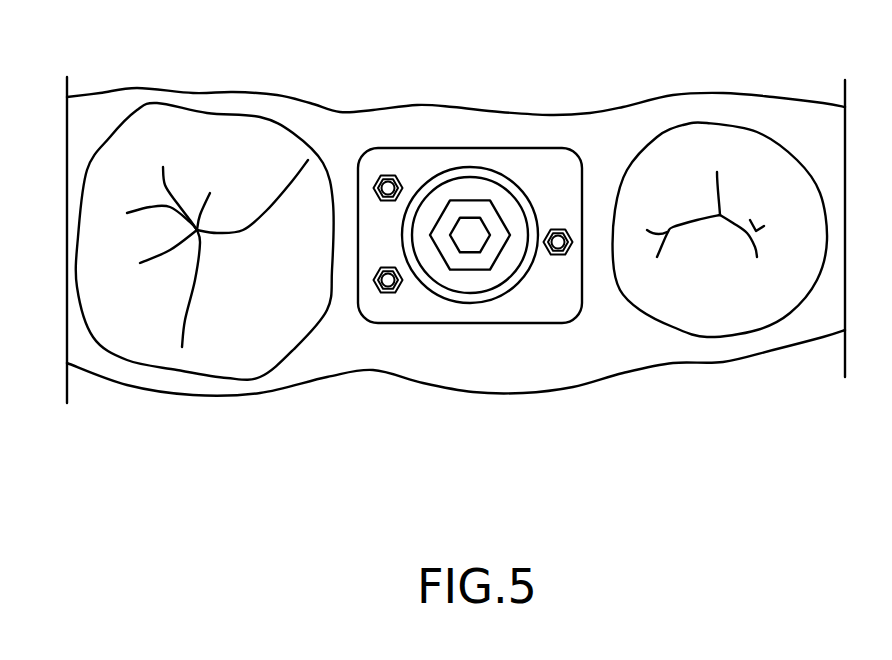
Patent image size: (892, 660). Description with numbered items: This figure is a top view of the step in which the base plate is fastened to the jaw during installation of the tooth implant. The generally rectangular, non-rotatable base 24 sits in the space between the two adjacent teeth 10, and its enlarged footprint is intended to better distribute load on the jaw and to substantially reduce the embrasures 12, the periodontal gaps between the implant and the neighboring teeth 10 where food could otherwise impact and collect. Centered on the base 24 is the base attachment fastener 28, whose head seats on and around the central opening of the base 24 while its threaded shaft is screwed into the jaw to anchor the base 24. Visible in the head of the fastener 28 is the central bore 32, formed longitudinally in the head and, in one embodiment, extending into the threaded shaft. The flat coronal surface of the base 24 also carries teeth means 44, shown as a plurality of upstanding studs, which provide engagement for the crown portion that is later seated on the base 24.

The adjacent teeth 10 is at (233, 123).
The embrasures 12 is at (337, 137).
The base 24 is at (543, 315).
The base attachment fastener 28 is at (465, 188).
The central bore 32 is at (475, 233).
The teeth means 44 is at (390, 174).